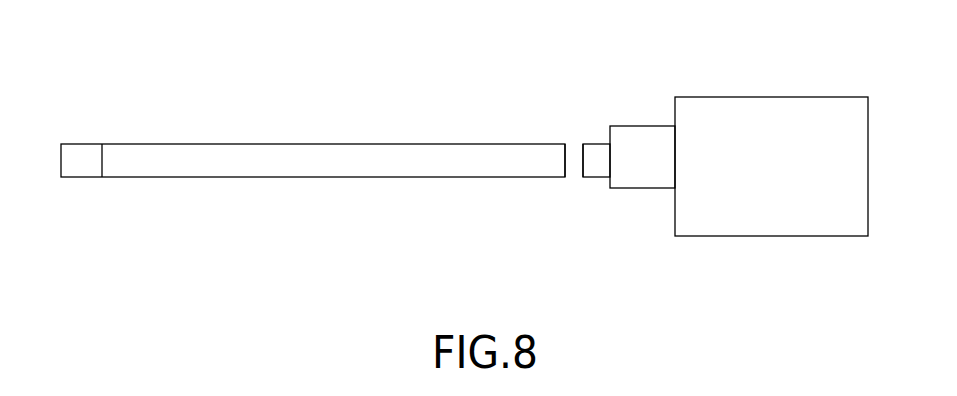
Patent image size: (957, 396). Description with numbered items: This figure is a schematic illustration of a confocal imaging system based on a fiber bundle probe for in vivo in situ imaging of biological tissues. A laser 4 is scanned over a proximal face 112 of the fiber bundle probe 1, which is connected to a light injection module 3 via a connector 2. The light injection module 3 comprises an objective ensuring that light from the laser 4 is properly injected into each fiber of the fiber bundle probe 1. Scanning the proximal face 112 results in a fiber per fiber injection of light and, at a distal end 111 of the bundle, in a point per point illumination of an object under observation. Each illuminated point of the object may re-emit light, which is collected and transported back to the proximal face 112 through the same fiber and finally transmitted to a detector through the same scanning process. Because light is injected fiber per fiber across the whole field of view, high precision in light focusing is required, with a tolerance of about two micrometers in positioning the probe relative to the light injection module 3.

The fiber bundle probe 1 is at (350, 152).
The distal end 111 is at (80, 158).
The proximal face 112 is at (575, 170).
The connector 2 is at (598, 148).
The light injection module 3 is at (652, 132).
The laser 4 is at (785, 117).